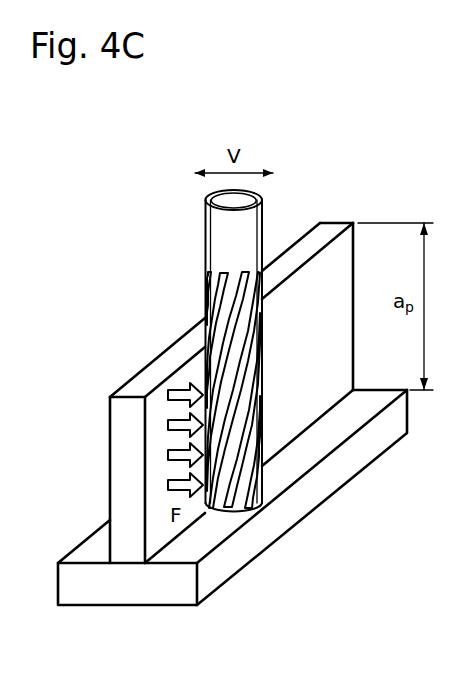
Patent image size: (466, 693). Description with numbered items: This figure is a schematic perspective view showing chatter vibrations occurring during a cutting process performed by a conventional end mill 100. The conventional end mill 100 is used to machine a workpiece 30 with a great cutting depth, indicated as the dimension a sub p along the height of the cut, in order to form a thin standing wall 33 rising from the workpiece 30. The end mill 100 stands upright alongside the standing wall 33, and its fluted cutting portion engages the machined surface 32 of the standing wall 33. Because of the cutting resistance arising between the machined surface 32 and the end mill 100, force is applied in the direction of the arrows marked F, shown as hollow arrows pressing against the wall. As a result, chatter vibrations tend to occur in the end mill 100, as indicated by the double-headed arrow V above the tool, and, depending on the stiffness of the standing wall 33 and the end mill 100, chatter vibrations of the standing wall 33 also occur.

The conventional end mill 100 is at (217, 242).
The workpiece 30 is at (338, 219).
The standing wall 33 is at (135, 382).
The machined surface 32 is at (161, 532).